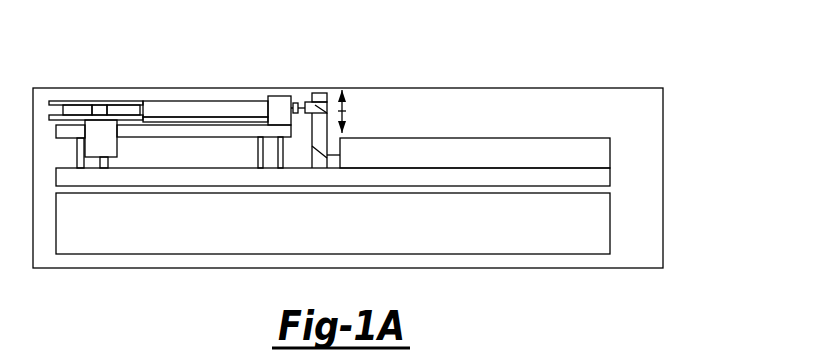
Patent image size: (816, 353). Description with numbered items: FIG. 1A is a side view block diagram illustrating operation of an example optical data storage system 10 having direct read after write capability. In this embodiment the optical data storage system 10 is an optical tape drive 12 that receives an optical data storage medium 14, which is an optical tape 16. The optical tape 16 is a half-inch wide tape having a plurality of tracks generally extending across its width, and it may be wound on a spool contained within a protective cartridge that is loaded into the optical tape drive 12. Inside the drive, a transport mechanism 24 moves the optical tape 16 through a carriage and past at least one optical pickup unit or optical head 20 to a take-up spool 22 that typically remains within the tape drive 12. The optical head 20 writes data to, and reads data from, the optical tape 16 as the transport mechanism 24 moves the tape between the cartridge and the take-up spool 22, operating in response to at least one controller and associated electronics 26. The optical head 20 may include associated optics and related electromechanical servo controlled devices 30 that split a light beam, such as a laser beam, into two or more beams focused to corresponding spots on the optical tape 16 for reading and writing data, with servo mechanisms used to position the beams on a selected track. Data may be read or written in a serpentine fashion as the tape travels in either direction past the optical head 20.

The optical data storage system 10 is at (128, 43).
The optical tape drive 12 is at (663, 114).
The optical data storage medium 14 is at (230, 100).
The optical tape 16 is at (183, 110).
The optical pickup unit (OPU) or optical head 20 is at (610, 152).
The take-up spool 22 is at (77, 103).
The transport mechanism 24 is at (136, 147).
The controller and associated electronics 26 is at (610, 225).
The optics and related electromechanical servo controlled devices 30 is at (319, 82).